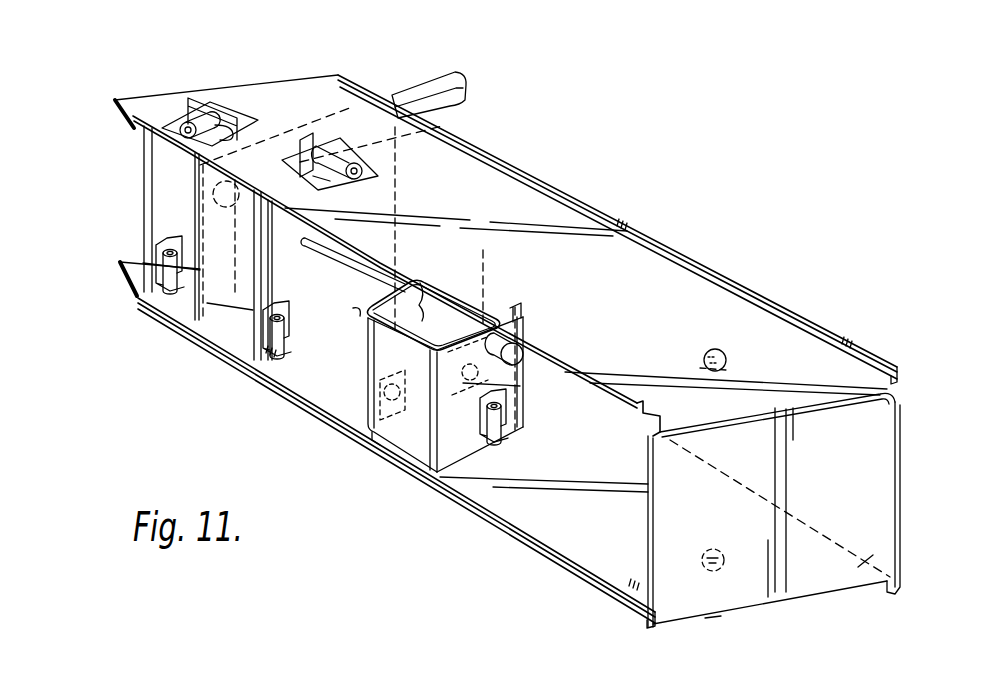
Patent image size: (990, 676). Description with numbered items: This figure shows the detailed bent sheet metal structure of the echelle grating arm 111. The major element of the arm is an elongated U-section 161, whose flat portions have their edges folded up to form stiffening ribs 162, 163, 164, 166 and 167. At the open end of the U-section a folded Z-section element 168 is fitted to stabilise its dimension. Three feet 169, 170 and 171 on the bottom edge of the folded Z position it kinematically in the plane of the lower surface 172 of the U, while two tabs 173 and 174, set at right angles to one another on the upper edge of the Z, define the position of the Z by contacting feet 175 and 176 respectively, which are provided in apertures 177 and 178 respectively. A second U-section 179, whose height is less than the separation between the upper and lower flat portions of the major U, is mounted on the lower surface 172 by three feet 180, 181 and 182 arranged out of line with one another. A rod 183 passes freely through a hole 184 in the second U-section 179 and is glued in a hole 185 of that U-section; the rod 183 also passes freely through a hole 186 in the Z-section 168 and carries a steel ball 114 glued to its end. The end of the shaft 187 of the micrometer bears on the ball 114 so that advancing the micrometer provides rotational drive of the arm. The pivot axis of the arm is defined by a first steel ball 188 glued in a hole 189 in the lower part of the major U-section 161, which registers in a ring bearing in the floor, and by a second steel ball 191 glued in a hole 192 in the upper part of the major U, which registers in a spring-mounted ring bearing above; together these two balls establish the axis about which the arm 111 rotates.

The echelle grating arm 111 is at (650, 228).
The steel ball 114 is at (222, 203).
The major U-section 161 is at (880, 433).
The stiffening rib 162 is at (589, 378).
The stiffening rib 163 is at (810, 317).
The stiffening rib 164 is at (650, 520).
The stiffening rib 166 is at (604, 600).
The stiffening rib 167 is at (900, 546).
The folded Z-section element 168 is at (160, 228).
The foot 169 is at (160, 290).
The foot 170 is at (270, 353).
The foot 171 is at (353, 312).
The lower surface 172 is at (293, 373).
The tab 173 is at (340, 154).
The tab 174 is at (200, 96).
The foot 175 is at (310, 172).
The foot 176 is at (230, 138).
The aperture 177 is at (292, 152).
The aperture 178 is at (248, 110).
The second U-section 179 is at (413, 437).
The foot 180 is at (500, 437).
The foot 181 is at (463, 383).
The foot 182 is at (373, 438).
The rod 183 is at (513, 355).
The hole 184 is at (490, 337).
The hole 185 is at (420, 283).
The hole 186 is at (304, 248).
The micrometer shaft 187 is at (432, 92).
The first steel ball 188 is at (713, 572).
The hole 189 is at (719, 548).
The second steel ball 191 is at (711, 349).
The hole 192 is at (732, 368).